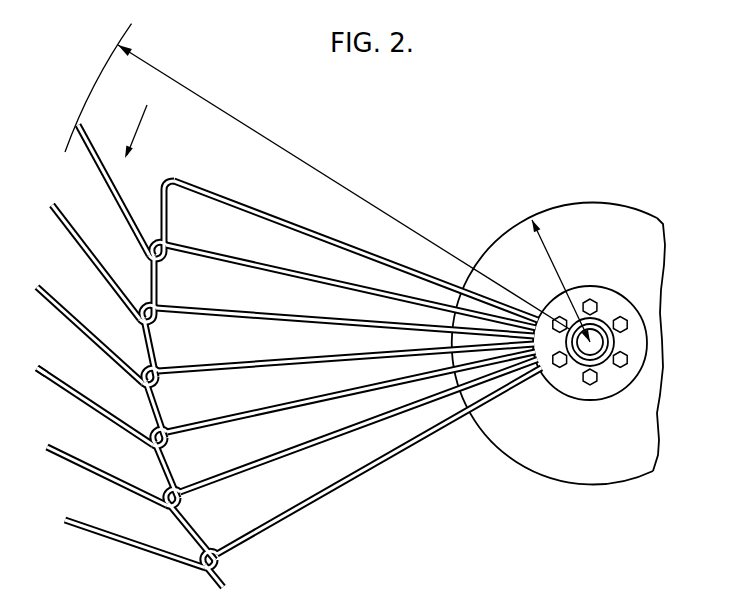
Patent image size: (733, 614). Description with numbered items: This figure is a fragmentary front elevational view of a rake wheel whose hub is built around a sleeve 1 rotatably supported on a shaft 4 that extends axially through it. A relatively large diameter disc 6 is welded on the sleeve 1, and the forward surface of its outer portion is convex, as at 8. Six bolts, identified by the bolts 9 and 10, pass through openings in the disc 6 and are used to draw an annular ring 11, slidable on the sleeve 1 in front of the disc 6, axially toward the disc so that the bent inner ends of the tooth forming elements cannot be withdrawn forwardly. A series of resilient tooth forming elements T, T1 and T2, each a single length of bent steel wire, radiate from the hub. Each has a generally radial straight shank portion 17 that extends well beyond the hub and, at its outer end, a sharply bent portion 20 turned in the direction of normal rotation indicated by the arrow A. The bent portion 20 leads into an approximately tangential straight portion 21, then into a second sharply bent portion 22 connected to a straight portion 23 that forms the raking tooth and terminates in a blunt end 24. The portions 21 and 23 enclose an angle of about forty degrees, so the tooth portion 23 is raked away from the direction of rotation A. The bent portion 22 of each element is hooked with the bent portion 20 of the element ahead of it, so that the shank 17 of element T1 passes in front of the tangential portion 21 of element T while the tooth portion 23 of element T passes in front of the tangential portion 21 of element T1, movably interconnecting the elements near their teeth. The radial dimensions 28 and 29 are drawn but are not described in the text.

The sleeve 1 is at (600, 362).
The shaft 4 is at (583, 362).
The disc 6 is at (521, 468).
The convex surface 8 is at (566, 469).
The bolt 9 is at (553, 331).
The bolt 10 is at (622, 370).
The annular ring 11 is at (608, 290).
The straight shank portion 17 is at (348, 367).
The sharply bent portion 20 is at (146, 370).
The straight portion 21 is at (154, 400).
The sharply bent portion 22 is at (169, 443).
The straight portion 23 is at (84, 404).
The blunt end 24 is at (37, 373).
The outer radius dimension 28 is at (249, 126).
The disc radius dimension 29 is at (541, 238).
The tooth forming element T is at (198, 359).
The tooth forming element T1 is at (270, 402).
The tooth forming element T2 is at (280, 453).
The arrow A is at (136, 131).